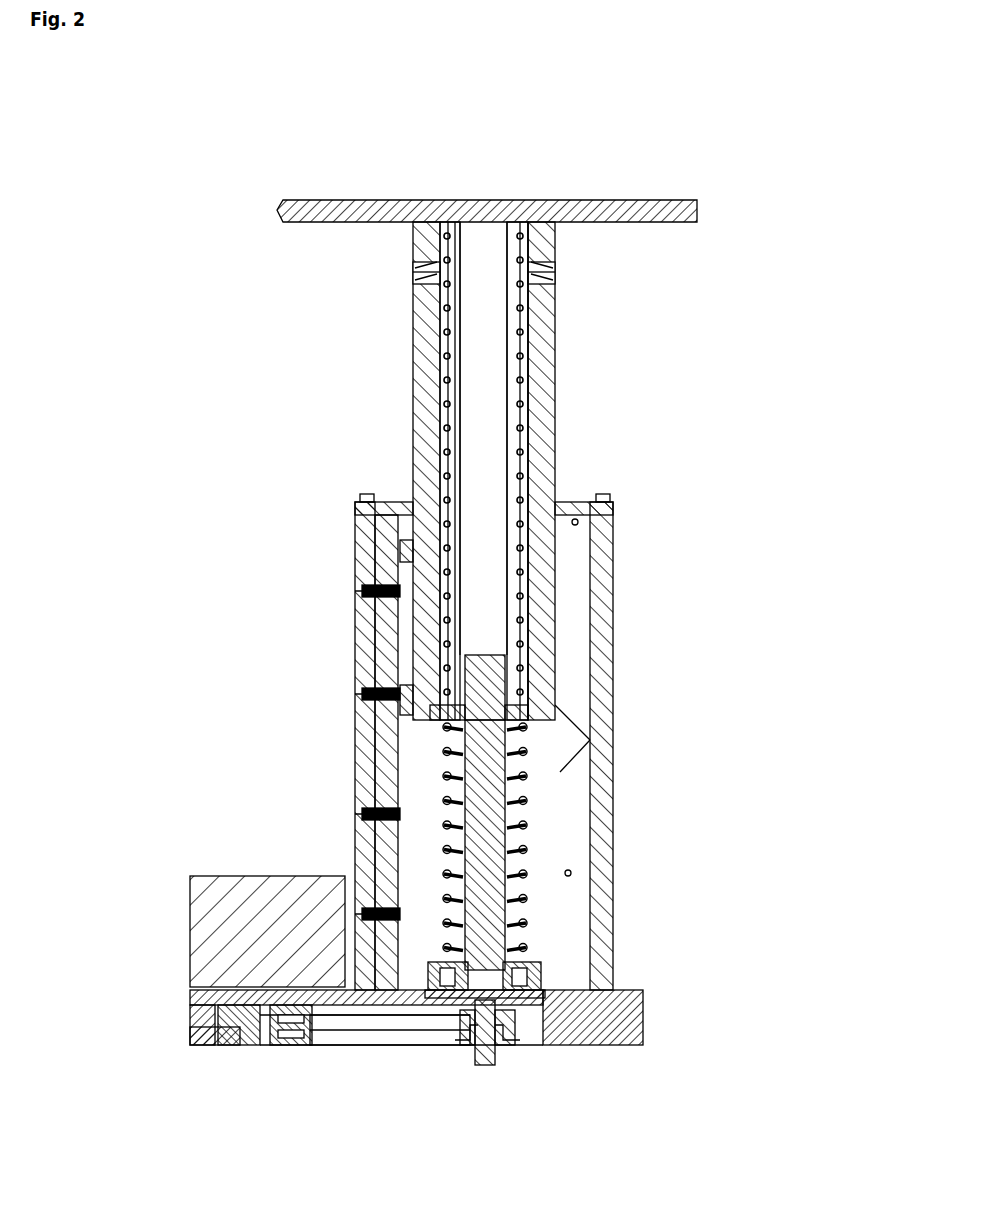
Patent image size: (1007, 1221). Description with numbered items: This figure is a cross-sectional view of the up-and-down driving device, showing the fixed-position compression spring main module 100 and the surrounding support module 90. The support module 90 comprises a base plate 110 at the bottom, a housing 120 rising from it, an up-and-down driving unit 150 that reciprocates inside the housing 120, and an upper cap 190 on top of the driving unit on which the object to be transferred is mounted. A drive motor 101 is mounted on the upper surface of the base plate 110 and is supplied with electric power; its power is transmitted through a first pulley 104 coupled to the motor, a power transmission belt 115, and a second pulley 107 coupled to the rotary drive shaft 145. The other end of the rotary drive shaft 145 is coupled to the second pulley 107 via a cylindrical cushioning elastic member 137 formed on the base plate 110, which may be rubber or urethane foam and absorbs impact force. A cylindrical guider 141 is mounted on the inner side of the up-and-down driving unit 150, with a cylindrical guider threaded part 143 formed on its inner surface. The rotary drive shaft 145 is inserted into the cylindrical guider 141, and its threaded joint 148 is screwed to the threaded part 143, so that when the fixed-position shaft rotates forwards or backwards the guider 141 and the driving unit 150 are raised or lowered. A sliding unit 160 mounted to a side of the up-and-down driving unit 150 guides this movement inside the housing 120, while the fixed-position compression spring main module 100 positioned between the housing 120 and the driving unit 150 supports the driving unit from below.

The support module 90 is at (758, 158).
The upper cap 190 is at (697, 212).
The up-and-down driving unit 150 is at (413, 351).
The cylindrical guider 141 is at (420, 403).
The cylindrical guider threaded part 143 is at (445, 463).
The housing 120 is at (590, 900).
The sliding unit 160 is at (390, 630).
The threaded joint 148 is at (392, 690).
The fixed-position compression spring main module 100 is at (538, 820).
The rotary drive shaft 145 is at (465, 770).
The cushioning elastic member 137 is at (560, 980).
The drive motor 101 is at (240, 943).
The base plate 110 is at (643, 1015).
The first pulley 104 is at (287, 1045).
The power transmission belt 115 is at (368, 1032).
The second pulley 107 is at (496, 1040).